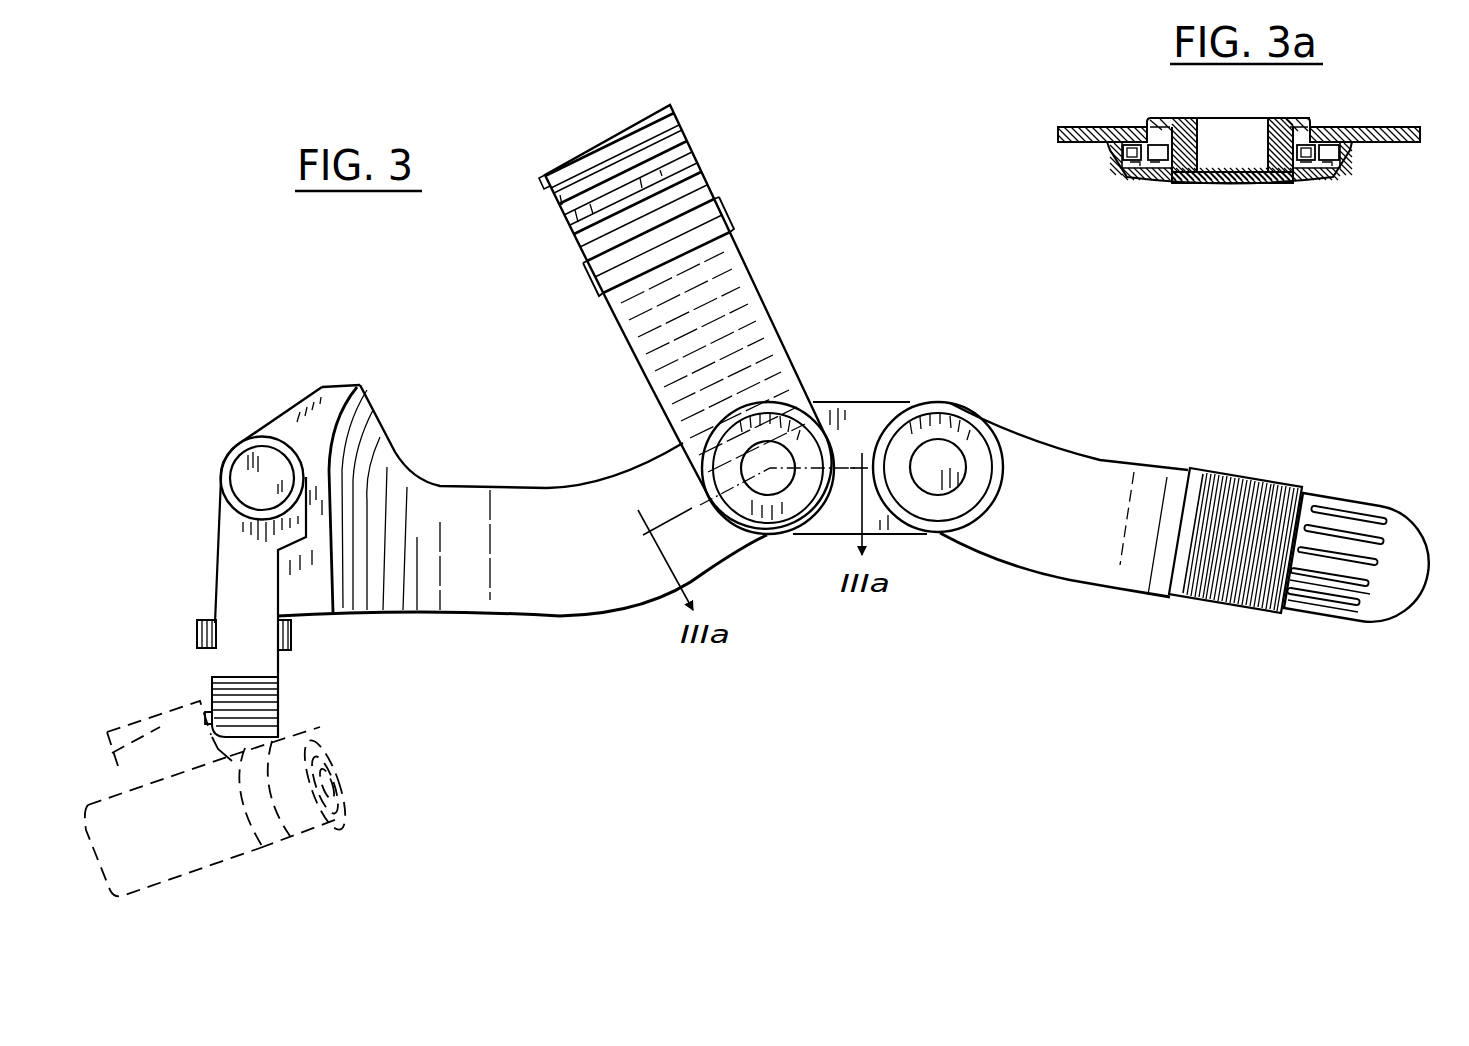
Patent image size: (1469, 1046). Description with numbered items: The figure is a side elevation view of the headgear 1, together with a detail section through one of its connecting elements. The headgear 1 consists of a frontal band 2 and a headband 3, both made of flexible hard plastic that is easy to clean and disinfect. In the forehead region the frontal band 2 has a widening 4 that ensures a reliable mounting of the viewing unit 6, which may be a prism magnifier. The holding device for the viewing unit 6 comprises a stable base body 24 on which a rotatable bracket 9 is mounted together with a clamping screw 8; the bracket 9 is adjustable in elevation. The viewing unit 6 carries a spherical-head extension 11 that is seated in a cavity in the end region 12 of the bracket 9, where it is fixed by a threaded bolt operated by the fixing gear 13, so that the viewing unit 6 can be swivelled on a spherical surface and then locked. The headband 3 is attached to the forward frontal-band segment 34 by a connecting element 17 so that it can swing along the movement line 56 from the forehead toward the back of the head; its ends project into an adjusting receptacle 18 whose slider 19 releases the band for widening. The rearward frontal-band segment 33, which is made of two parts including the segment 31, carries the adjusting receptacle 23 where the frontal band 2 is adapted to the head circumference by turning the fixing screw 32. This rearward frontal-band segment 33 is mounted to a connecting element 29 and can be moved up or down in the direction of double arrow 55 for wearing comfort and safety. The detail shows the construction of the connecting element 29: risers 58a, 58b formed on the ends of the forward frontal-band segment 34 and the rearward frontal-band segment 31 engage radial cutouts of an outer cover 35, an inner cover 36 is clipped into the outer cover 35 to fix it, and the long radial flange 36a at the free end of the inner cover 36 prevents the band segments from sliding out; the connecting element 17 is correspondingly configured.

In FIG. 3, the headgear 1 is at (897, 375).
In FIG. 3, the frontal band 2 is at (528, 488).
In FIG. 3, the headband 3 is at (742, 298).
In FIG. 3, the widening 4 is at (380, 440).
In FIG. 3, the viewing unit 6 is at (227, 847).
In FIG. 3, the clamping screw 8 is at (247, 477).
In FIG. 3, the bracket 9 is at (228, 530).
In FIG. 3, the spherical-head extension 11 is at (207, 711).
In FIG. 3, the end region 12 is at (255, 662).
In FIG. 3, the fixing gear 13 is at (197, 633).
In FIG. 3, the connecting element 17 is at (773, 483).
In FIG. 3a, the connecting element 17 is at (1232, 225).
In FIG. 3, the adjusting receptacle 18 is at (700, 180).
In FIG. 3, the slider 19 is at (565, 155).
In FIG. 3, the adjusting receptacle 23 is at (1210, 580).
In FIG. 3, the base body 24 is at (297, 414).
In FIG. 3, the connecting element 29 is at (928, 483).
In FIG. 3a, the connecting element 29 is at (1232, 187).
In FIG. 3a, the rearward frontal-band segment 31 is at (1345, 127).
In FIG. 3, the fixing screw 32 is at (1313, 607).
In FIG. 3, the rearward frontal-band segment 33 is at (1077, 570).
In FIG. 3a, the forward frontal-band segment 34 is at (1083, 127).
In FIG. 3a, the outer cover 35 is at (1162, 183).
In FIG. 3a, the inner cover 36 is at (1175, 118).
In FIG. 3a, the flange 36a is at (1288, 122).
In FIG. 3, the double arrow 55 is at (1460, 477).
In FIG. 3, the movement line 56 is at (660, 57).
In FIG. 3a, the riser 58a is at (1120, 173).
In FIG. 3a, the riser 58b is at (1313, 187).